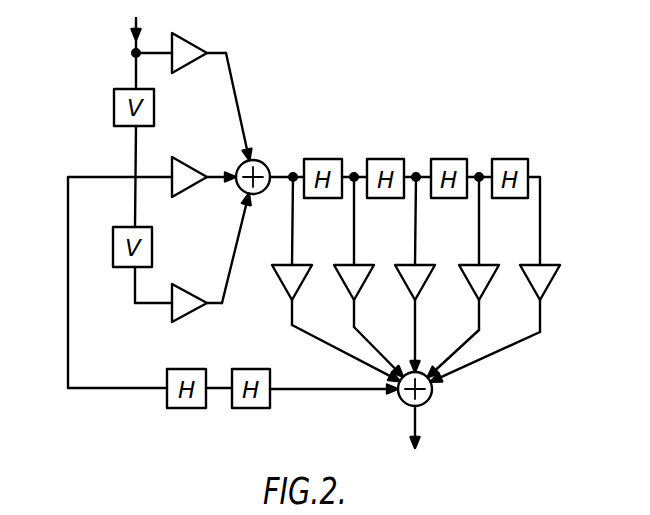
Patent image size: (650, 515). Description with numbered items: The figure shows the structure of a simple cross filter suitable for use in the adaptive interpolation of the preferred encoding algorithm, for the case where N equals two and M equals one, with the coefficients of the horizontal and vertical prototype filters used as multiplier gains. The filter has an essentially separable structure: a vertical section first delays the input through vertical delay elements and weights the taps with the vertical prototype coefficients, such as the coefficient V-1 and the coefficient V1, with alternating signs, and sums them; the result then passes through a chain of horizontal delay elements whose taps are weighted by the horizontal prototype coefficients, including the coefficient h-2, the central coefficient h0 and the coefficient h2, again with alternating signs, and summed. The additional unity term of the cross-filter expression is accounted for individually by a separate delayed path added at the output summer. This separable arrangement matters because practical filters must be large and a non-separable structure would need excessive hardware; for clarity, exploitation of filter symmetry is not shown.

The vertical prototype coefficient V-1 is at (211, 84).
The vertical prototype coefficient V1 is at (211, 258).
The horizontal prototype coefficient h-2 is at (336, 323).
The horizontal prototype coefficient h0 is at (423, 318).
The horizontal prototype coefficient h2 is at (502, 323).